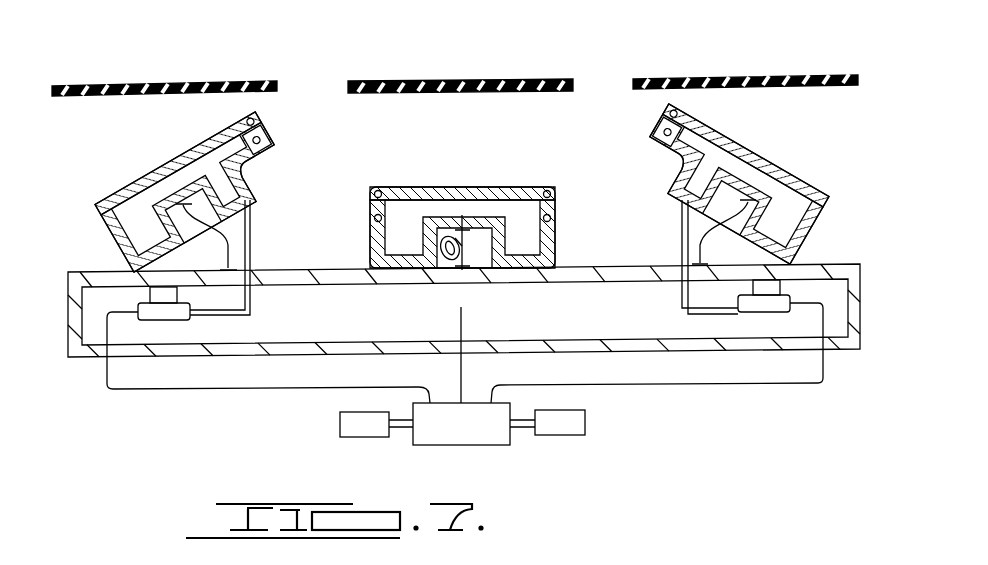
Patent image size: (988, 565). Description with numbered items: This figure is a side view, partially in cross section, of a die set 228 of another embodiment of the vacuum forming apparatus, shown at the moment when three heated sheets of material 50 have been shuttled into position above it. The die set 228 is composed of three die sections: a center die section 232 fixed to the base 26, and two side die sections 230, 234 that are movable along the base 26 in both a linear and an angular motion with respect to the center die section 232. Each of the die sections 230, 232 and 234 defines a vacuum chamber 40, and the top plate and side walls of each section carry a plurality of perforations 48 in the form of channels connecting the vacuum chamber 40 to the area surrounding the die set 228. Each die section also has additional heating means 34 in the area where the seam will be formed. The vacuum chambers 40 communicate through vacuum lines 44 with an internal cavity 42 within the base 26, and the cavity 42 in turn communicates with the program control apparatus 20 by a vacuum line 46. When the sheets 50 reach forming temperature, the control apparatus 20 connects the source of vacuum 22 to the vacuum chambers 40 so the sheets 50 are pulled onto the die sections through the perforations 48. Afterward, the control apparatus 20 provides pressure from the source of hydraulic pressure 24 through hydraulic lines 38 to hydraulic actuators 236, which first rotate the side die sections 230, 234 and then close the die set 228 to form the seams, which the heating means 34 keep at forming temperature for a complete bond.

The sheets of material 50 is at (189, 83).
The perforations 48 is at (195, 150).
The heating means 34 is at (252, 120).
The side die section 230 is at (108, 204).
The vacuum chamber 40 is at (232, 190).
The vacuum lines 44 is at (232, 254).
The die set 228 is at (477, 152).
The center die section 232 is at (518, 187).
The side die section 234 is at (828, 196).
The internal cavity 42 is at (585, 324).
The hydraulic actuators 236 is at (182, 312).
The base 26 is at (853, 346).
The hydraulic lines 38 is at (203, 390).
The vacuum line 46 is at (462, 370).
The program control apparatus 20 is at (500, 433).
The source of vacuum 22 is at (573, 430).
The source of hydraulic pressure 24 is at (349, 433).